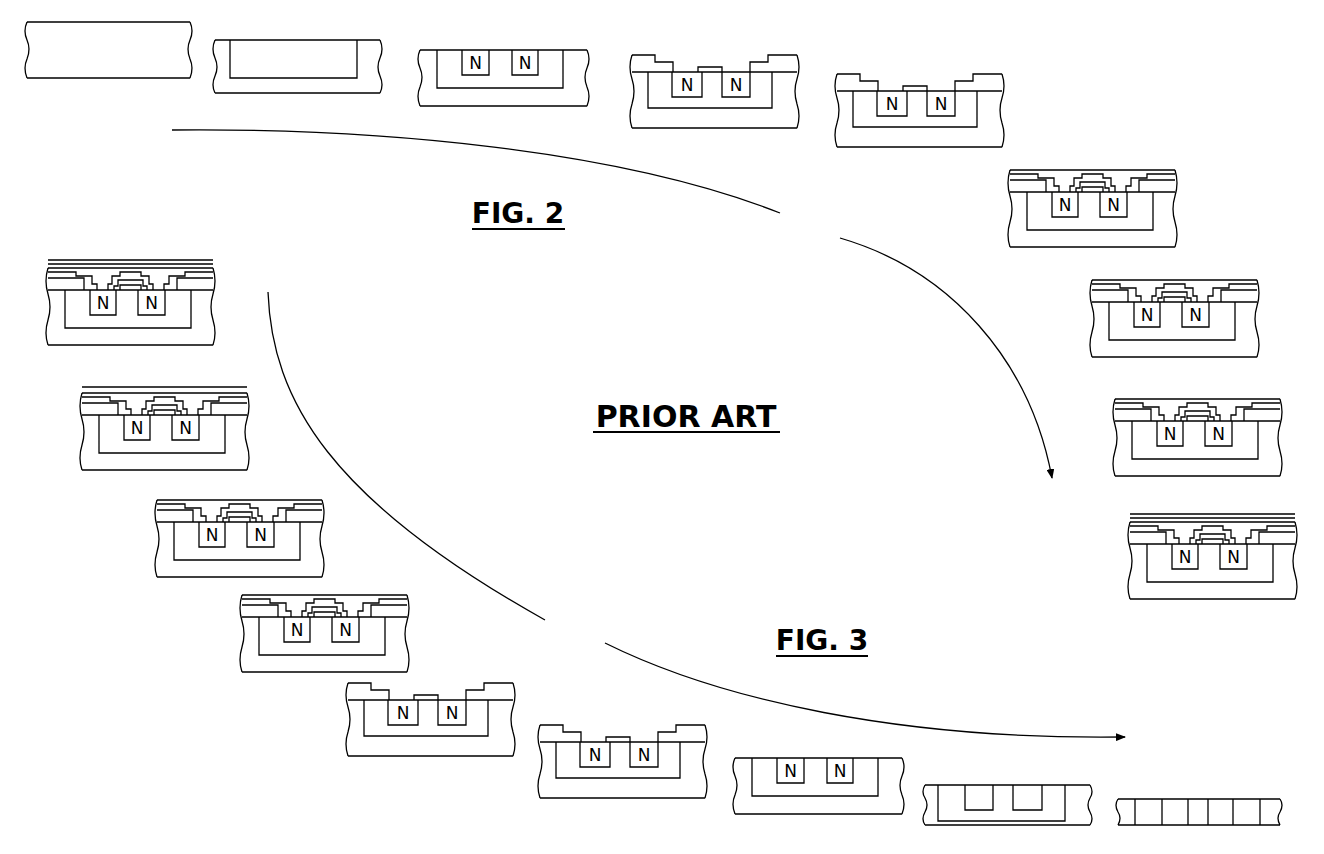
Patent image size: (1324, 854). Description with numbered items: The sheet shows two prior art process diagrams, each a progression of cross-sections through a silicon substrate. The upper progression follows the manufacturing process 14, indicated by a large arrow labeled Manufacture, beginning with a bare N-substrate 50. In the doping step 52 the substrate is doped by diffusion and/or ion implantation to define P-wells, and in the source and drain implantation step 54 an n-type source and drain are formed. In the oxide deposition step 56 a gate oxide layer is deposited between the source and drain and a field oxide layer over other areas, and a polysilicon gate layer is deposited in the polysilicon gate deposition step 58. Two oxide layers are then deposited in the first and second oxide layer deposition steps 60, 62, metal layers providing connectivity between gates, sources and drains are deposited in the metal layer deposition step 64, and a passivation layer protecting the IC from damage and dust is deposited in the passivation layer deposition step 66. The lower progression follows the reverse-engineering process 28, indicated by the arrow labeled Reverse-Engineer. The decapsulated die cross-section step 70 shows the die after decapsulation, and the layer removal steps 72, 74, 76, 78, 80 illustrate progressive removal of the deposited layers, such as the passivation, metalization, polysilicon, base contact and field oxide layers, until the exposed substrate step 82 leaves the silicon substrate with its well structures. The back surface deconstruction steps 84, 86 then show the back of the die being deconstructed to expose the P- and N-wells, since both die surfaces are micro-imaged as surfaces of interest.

In FIG. 2, the manufacturing process 14 is at (975, 326).
In FIG. 3, the reverse-engineering process 28 is at (371, 498).
In FIG. 2, the N-substrate 50 is at (96, 96).
In FIG. 2, the doping step 52 is at (347, 26).
In FIG. 2, the source and drain implantation step 54 is at (546, 28).
In FIG. 2, the oxide deposition step 56 is at (730, 38).
In FIG. 2, the polysilicon gate deposition step 58 is at (956, 60).
In FIG. 2, the first oxide layer deposition step 60 is at (1117, 147).
In FIG. 2, the second oxide layer deposition step 62 is at (1226, 252).
In FIG. 2, the metal layer deposition step 64 is at (1283, 374).
In FIG. 2, the passivation layer deposition step 66 is at (1114, 552).
In FIG. 3, the decapsulated die cross-section step 70 is at (131, 231).
In FIG. 3, the layer removal step 72 is at (66, 437).
In FIG. 3, the layer removal step 74 is at (140, 554).
In FIG. 3, the layer removal step 76 is at (233, 652).
In FIG. 3, the layer removal step 78 is at (336, 737).
In FIG. 3, the layer removal step 80 is at (536, 790).
In FIG. 3, the exposed substrate step 82 is at (770, 820).
In FIG. 3, the back surface deconstruction step 84 is at (952, 835).
In FIG. 3, the back surface deconstruction step 86 is at (1250, 788).